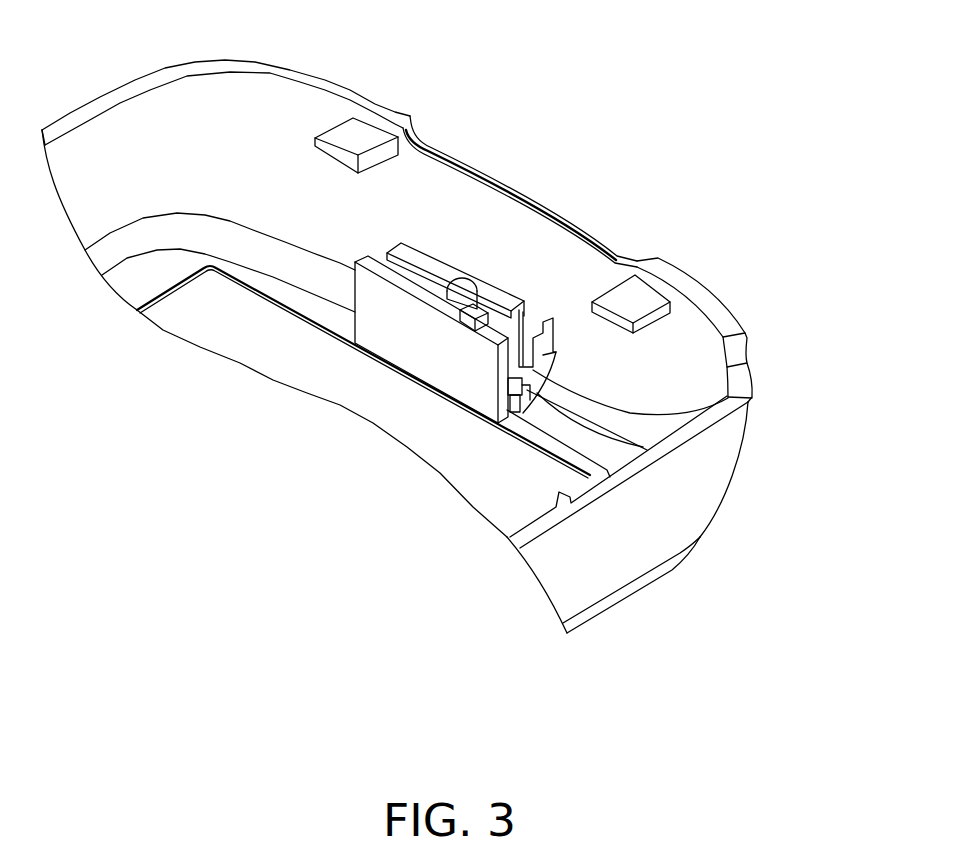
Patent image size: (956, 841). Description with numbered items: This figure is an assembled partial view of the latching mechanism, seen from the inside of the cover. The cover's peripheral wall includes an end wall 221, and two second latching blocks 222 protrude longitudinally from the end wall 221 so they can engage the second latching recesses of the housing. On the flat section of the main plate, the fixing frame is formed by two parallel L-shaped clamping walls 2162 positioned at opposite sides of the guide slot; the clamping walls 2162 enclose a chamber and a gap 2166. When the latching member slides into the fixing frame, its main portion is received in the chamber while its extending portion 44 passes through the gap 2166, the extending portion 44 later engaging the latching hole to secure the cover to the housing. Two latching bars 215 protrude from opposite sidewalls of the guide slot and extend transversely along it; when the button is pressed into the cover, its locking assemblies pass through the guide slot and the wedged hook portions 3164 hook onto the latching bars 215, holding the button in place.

The latching bar 215 is at (543, 435).
The end wall 221 is at (682, 355).
The second latching block 222 is at (635, 297).
The clamping wall 2162 is at (377, 303).
The gap 2166 is at (413, 252).
The extending portion 44 is at (487, 288).
The hook portion 3164 is at (633, 445).